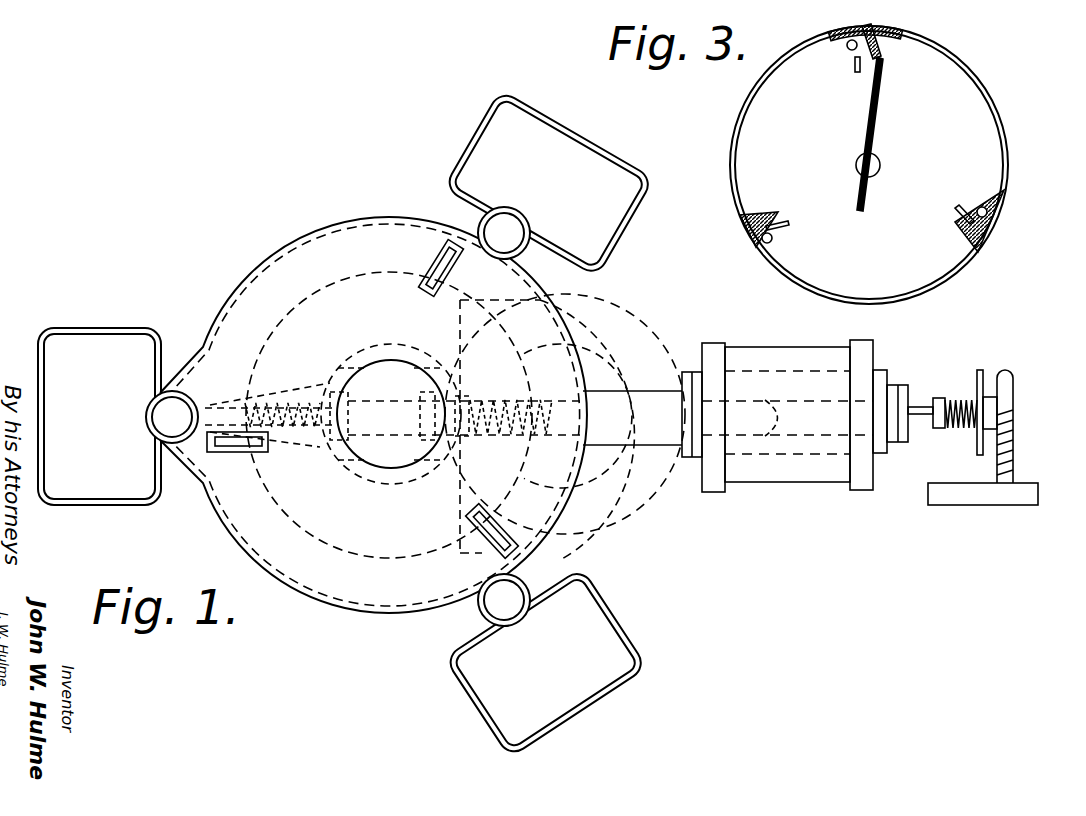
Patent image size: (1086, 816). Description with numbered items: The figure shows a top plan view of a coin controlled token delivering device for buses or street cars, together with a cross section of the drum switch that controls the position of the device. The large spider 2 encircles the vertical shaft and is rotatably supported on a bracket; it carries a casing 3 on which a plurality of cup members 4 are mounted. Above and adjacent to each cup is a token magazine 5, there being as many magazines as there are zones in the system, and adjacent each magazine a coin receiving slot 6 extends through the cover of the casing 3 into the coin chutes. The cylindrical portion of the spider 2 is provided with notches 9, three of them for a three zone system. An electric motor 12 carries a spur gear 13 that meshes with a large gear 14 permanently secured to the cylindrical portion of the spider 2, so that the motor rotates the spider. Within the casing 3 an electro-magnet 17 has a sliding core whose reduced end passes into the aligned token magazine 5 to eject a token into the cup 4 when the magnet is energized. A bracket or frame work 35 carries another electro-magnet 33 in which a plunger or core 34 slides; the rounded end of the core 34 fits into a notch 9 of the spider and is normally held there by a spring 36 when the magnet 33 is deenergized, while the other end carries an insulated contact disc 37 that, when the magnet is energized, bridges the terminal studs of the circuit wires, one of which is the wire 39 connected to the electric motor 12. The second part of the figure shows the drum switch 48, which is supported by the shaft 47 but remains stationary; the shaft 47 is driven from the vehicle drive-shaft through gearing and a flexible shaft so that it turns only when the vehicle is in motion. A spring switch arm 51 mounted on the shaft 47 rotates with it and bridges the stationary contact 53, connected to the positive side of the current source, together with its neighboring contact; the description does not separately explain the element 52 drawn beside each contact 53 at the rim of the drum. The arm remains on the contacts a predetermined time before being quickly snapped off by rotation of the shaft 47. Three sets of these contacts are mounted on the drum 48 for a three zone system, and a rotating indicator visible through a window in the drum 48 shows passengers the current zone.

In FIG. 1, the spider 2 is at (405, 345).
In FIG. 1, the casing 3 is at (347, 612).
In FIG. 1, the cup members 4 is at (618, 229).
In FIG. 1, the token magazine 5 is at (522, 240).
In FIG. 1, the coin receiving slot 6 is at (440, 262).
In FIG. 1, the notches 9 is at (360, 370).
In FIG. 1, the electric motor 12 is at (636, 322).
In FIG. 1, the spur gear 13 is at (595, 368).
In FIG. 1, the large gear 14 is at (546, 465).
In FIG. 1, the electro-magnet 17 is at (404, 475).
In FIG. 1, the electro-magnet 33 is at (784, 486).
In FIG. 1, the plunger or core 34 is at (787, 412).
In FIG. 1, the bracket or frame work 35 is at (640, 447).
In FIG. 1, the spring 36 is at (395, 426).
In FIG. 1, the contact disc 37 is at (983, 374).
In FIG. 1, the wire 39 is at (1013, 438).
In FIG. 3, the shaft 47 is at (881, 165).
In FIG. 3, the drum switch 48 is at (1000, 118).
In FIG. 3, the spring switch arm 51 is at (882, 112).
In FIG. 3, the stop bar 52 is at (859, 78).
In FIG. 3, the contact 53 is at (850, 52).